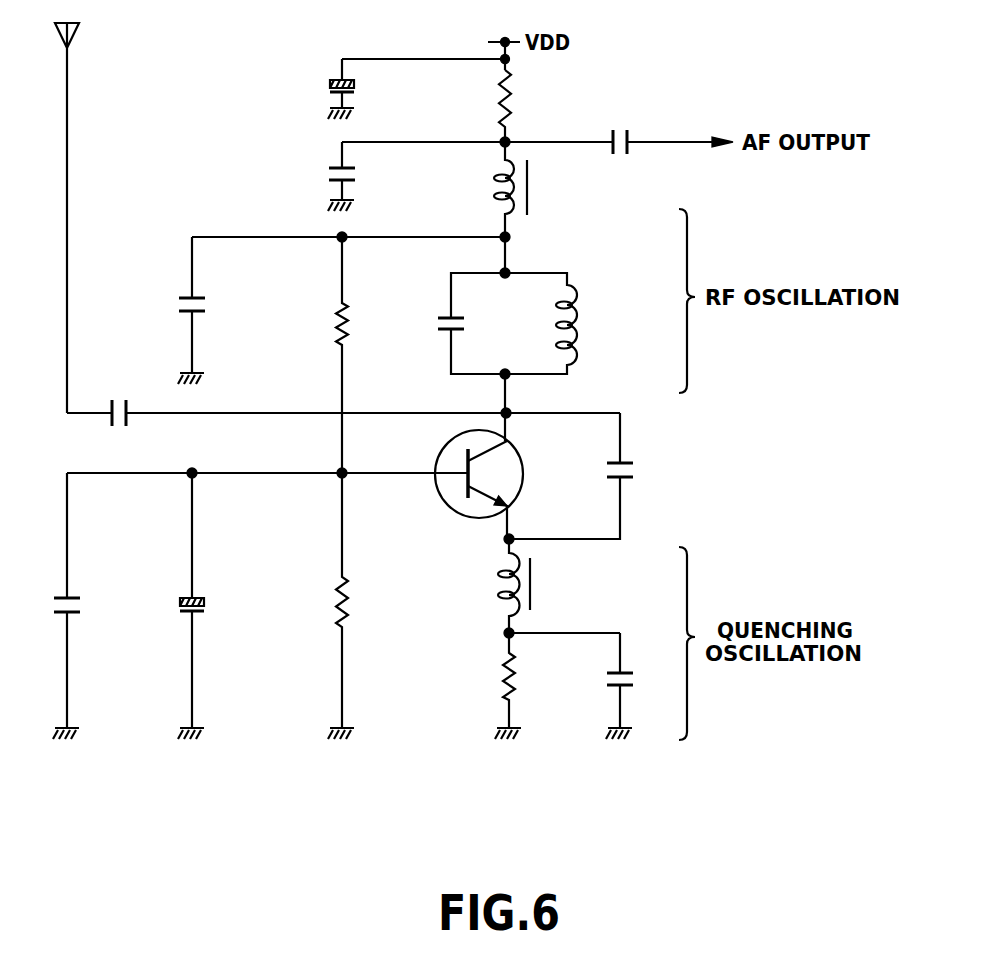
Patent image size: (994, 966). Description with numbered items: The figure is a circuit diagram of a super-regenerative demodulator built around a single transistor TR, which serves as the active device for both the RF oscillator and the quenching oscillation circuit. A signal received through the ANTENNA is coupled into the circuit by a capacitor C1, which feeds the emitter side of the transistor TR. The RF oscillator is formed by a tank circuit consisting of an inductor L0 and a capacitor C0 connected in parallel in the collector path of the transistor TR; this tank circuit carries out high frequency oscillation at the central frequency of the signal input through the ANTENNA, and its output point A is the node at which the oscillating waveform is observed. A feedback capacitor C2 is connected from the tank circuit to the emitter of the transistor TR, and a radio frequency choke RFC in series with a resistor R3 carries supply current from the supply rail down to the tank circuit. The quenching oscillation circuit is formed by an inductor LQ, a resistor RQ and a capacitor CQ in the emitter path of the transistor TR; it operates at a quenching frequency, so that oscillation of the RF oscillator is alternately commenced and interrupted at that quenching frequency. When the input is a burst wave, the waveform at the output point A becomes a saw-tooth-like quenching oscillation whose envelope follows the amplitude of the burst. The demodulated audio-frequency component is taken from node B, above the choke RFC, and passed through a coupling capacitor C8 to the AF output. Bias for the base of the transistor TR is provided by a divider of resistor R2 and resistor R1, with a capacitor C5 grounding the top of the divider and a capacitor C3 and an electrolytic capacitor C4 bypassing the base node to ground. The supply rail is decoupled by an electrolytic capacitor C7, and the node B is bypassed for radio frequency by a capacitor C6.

The antenna ANTENNA is at (124, 218).
The electrolytic capacitor C7 is at (347, 84).
The resistor R3 is at (522, 106).
The node B (AF output node) B is at (516, 134).
The coupling capacitor C8 is at (622, 156).
The capacitor C6 is at (359, 176).
The radio frequency choke RFC is at (536, 189).
The capacitor C5 is at (207, 310).
The resistor R2 is at (359, 355).
The output point of the tank circuit A is at (515, 266).
The capacitor C0 is at (461, 323).
The inductor L0 is at (558, 323).
The antenna coupling capacitor C1 is at (343, 427).
The transistor TR is at (492, 484).
The feedback capacitor C2 is at (571, 476).
The capacitor C3 is at (83, 606).
The electrolytic capacitor C4 is at (202, 606).
The resistor R1 is at (355, 606).
The inductor LQ is at (532, 586).
The resistor RQ is at (525, 686).
The capacitor CQ is at (638, 686).